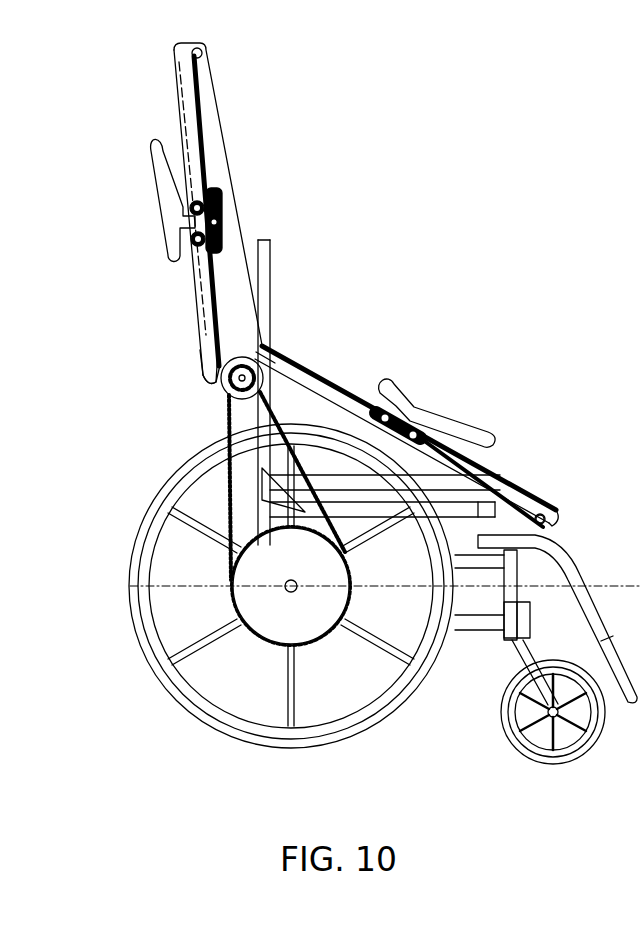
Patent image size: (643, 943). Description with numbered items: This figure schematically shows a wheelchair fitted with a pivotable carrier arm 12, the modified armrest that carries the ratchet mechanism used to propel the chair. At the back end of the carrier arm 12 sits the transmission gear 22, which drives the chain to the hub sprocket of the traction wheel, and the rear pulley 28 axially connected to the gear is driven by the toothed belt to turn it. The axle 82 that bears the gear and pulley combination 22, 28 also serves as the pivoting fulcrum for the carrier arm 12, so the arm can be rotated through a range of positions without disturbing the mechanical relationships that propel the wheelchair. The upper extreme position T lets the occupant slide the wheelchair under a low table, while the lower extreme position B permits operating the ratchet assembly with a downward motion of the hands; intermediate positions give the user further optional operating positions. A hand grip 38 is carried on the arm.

The carrier arm 12 is at (174, 48).
The transmission gear 22 is at (248, 372).
The rear pulley 28 is at (218, 380).
The hand grip 38 is at (408, 410).
The axle 82 is at (262, 355).
The upper extreme position T is at (285, 117).
The bottom lever arm B is at (553, 448).